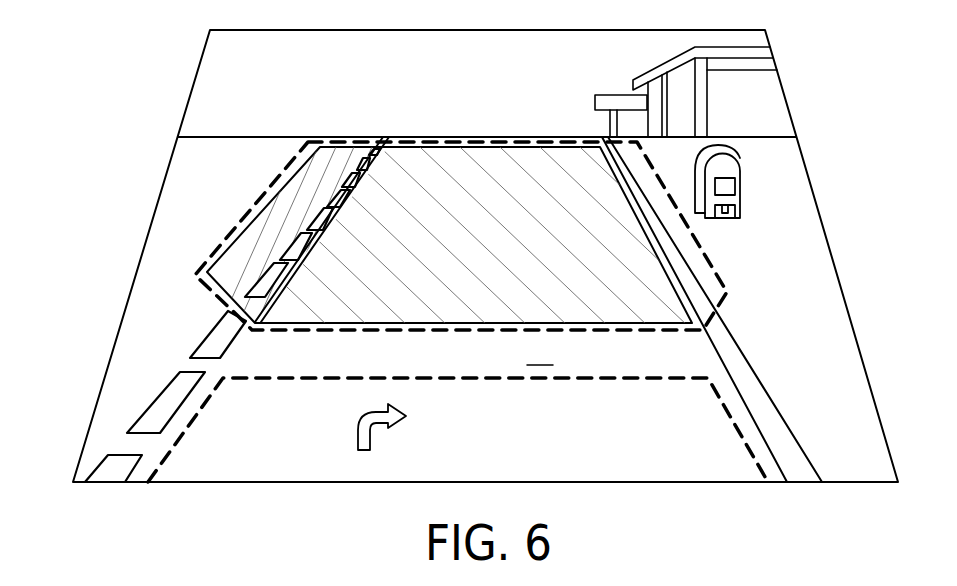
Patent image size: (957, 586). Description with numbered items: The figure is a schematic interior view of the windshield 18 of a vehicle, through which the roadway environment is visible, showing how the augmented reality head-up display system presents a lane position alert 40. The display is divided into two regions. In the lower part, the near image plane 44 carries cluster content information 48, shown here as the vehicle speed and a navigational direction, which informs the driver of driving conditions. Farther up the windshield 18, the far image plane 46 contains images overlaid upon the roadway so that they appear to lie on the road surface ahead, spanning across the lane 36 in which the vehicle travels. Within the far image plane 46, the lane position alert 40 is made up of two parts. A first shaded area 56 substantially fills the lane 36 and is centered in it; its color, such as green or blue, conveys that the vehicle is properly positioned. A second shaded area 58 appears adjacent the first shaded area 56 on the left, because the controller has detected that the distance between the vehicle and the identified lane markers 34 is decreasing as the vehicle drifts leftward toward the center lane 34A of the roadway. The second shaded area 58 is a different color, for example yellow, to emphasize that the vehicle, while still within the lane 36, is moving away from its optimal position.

The windshield 18 is at (800, 148).
The lane markers 34 is at (788, 453).
The center lane 34A is at (165, 402).
The lane 36 is at (540, 353).
The lane position alert 40 is at (446, 214).
The near image plane 44 is at (748, 445).
The far image plane 46 is at (707, 262).
The cluster content information 48 is at (331, 458).
The first shaded area 56 is at (475, 178).
The second shaded area 58 is at (238, 257).